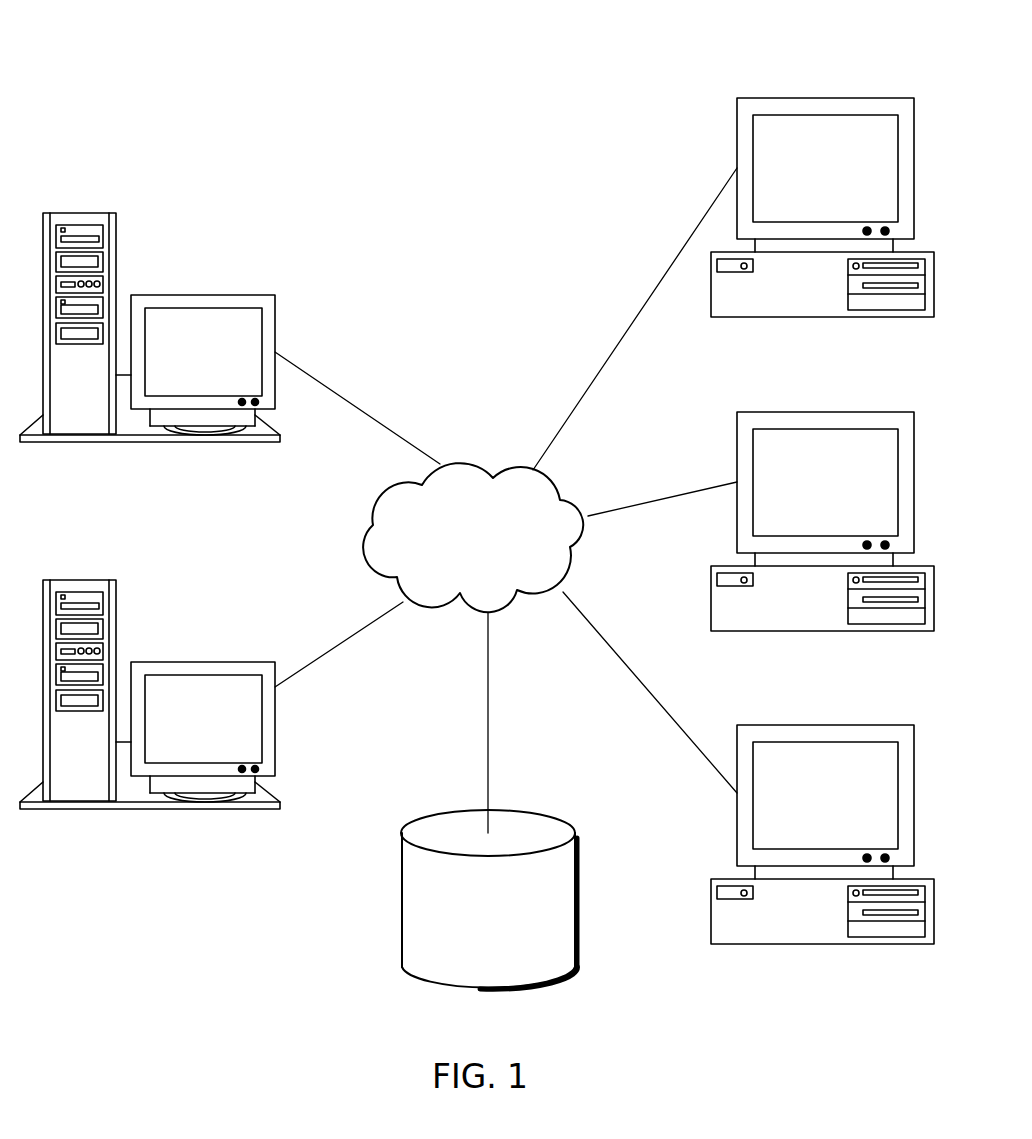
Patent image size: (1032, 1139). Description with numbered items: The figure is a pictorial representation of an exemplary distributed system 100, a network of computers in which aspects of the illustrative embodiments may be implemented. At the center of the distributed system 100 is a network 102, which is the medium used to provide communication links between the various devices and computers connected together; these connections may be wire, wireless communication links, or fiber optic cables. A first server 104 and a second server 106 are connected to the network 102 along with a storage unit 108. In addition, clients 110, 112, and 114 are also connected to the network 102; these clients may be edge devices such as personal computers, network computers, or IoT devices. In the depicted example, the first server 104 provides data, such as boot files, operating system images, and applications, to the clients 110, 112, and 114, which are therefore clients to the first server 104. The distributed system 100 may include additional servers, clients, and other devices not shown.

The distributed system 100 is at (192, 71).
The network 102 is at (495, 569).
The first server 104 is at (78, 213).
The second server 106 is at (78, 580).
The storage unit 108 is at (465, 952).
The client 110 is at (825, 98).
The client 112 is at (825, 412).
The client 114 is at (870, 725).